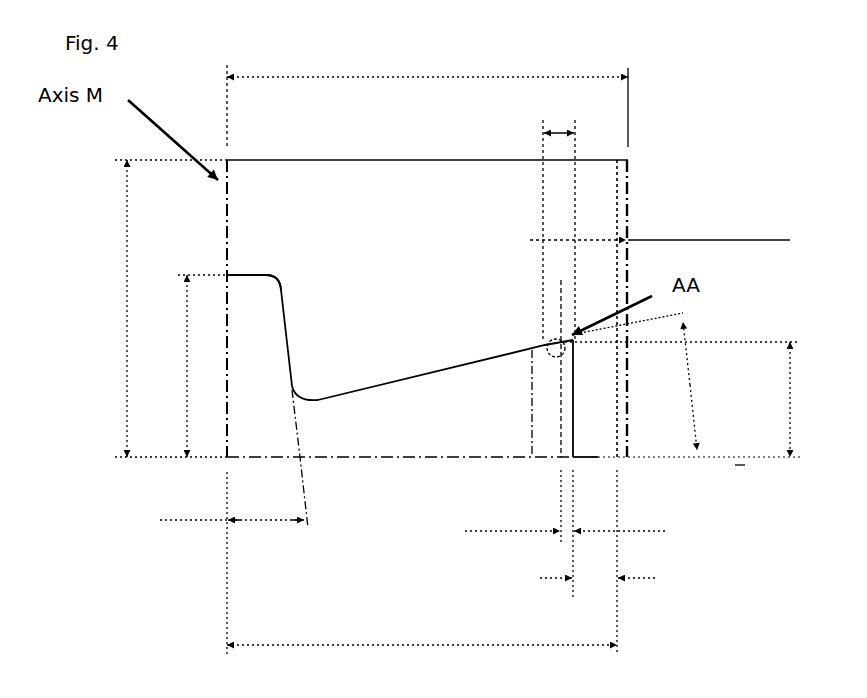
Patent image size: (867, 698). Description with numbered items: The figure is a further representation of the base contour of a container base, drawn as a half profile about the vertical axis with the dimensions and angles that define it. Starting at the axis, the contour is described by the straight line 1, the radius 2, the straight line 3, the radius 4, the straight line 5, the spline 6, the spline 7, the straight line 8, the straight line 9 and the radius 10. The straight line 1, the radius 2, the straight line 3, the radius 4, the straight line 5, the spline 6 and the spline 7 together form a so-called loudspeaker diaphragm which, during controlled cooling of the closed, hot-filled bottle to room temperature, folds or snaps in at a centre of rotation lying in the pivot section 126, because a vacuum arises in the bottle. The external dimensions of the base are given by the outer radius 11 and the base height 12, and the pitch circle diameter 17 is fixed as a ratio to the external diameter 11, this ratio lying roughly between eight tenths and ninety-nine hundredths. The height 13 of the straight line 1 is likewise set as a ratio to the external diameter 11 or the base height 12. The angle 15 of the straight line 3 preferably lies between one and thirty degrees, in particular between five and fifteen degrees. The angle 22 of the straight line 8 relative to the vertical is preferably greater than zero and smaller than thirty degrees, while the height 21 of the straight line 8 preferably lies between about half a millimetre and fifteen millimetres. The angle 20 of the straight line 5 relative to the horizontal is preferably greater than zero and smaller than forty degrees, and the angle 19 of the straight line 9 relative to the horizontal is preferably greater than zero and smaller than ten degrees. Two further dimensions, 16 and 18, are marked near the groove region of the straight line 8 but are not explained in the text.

The straight line 1 is at (250, 263).
The radius 2 is at (222, 325).
The straight line 3 is at (290, 317).
The radius 4 is at (307, 385).
The straight line 5 is at (405, 363).
The spline 6 is at (544, 338).
The spline 7 is at (578, 322).
The straight line 8 is at (558, 402).
The straight line 9 is at (600, 460).
The radius 10 is at (681, 238).
The outer radius 11 is at (427, 91).
The base height 12 is at (151, 308).
The height 13 is at (193, 366).
The angle 15 is at (232, 563).
The groove offset width 16 is at (571, 535).
The pitch circle diameter 17 is at (422, 562).
The groove width 18 is at (565, 507).
The angle 19 is at (738, 470).
The angle 20 is at (738, 452).
The height 21 is at (697, 399).
The angle 22 is at (545, 133).
The pivot section 126 is at (578, 312).